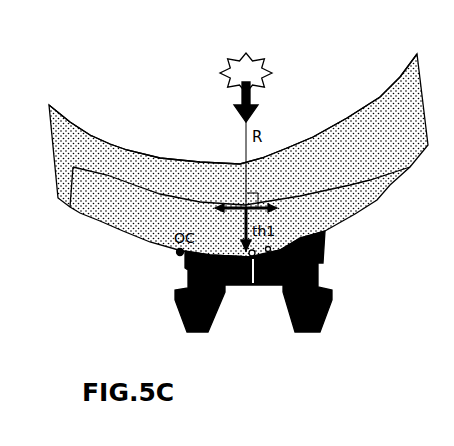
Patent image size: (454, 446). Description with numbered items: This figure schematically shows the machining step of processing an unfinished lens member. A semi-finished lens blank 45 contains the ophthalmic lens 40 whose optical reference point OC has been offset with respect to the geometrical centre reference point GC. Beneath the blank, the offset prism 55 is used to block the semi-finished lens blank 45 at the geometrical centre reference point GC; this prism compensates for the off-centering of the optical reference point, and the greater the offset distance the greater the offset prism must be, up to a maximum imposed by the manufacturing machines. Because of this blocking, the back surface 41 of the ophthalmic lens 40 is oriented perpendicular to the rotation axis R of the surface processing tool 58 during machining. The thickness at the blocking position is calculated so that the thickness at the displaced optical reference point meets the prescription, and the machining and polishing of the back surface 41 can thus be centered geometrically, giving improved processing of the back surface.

The ophthalmic lens 40 is at (368, 203).
The back surface 41 is at (370, 180).
The semi-finished lens blank 45 is at (378, 100).
The offset prism 55 is at (323, 250).
The surface processing tool 58 is at (233, 74).